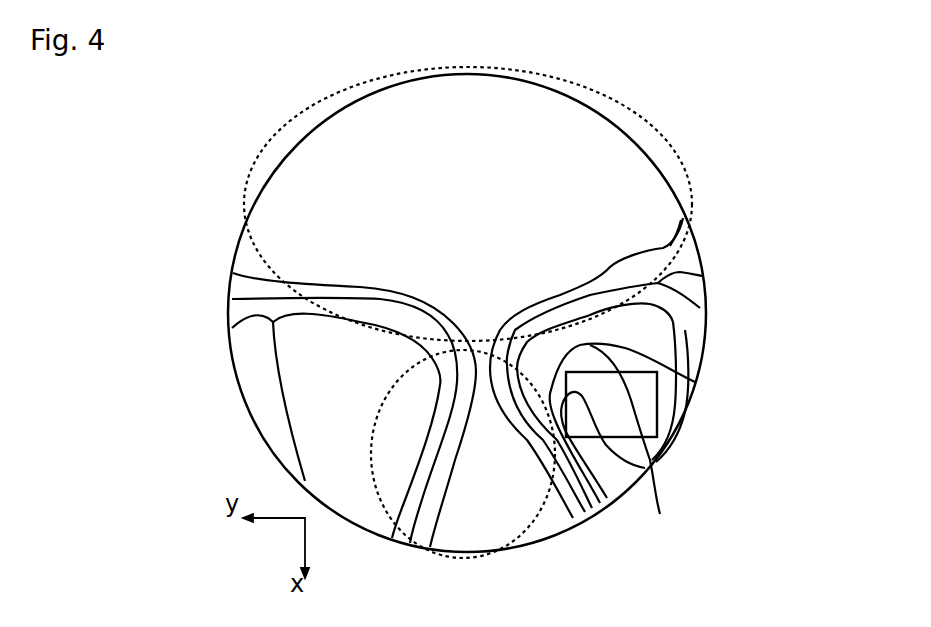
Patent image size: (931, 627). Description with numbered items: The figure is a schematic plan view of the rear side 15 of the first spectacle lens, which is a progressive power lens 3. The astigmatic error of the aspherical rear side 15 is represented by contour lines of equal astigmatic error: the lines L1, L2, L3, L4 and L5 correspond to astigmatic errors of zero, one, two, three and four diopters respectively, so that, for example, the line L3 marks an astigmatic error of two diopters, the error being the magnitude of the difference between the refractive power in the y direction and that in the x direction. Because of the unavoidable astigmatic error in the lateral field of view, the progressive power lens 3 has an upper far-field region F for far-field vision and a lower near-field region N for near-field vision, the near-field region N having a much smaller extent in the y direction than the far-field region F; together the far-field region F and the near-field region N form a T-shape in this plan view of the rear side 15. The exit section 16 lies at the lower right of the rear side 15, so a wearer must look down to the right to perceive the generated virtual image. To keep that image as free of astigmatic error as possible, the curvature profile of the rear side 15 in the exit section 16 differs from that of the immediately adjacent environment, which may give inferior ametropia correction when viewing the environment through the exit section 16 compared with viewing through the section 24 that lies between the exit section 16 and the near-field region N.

The rear side 15 is at (503, 122).
The far-field region F is at (690, 176).
The near-field region N is at (543, 503).
The progressive power lens 3 is at (256, 432).
The line L1 is at (231, 271).
The line L2 is at (257, 299).
The line L3 is at (231, 330).
The line L4 is at (645, 468).
The line L5 is at (660, 514).
The section 24 is at (695, 382).
The exit section 16 is at (657, 398).